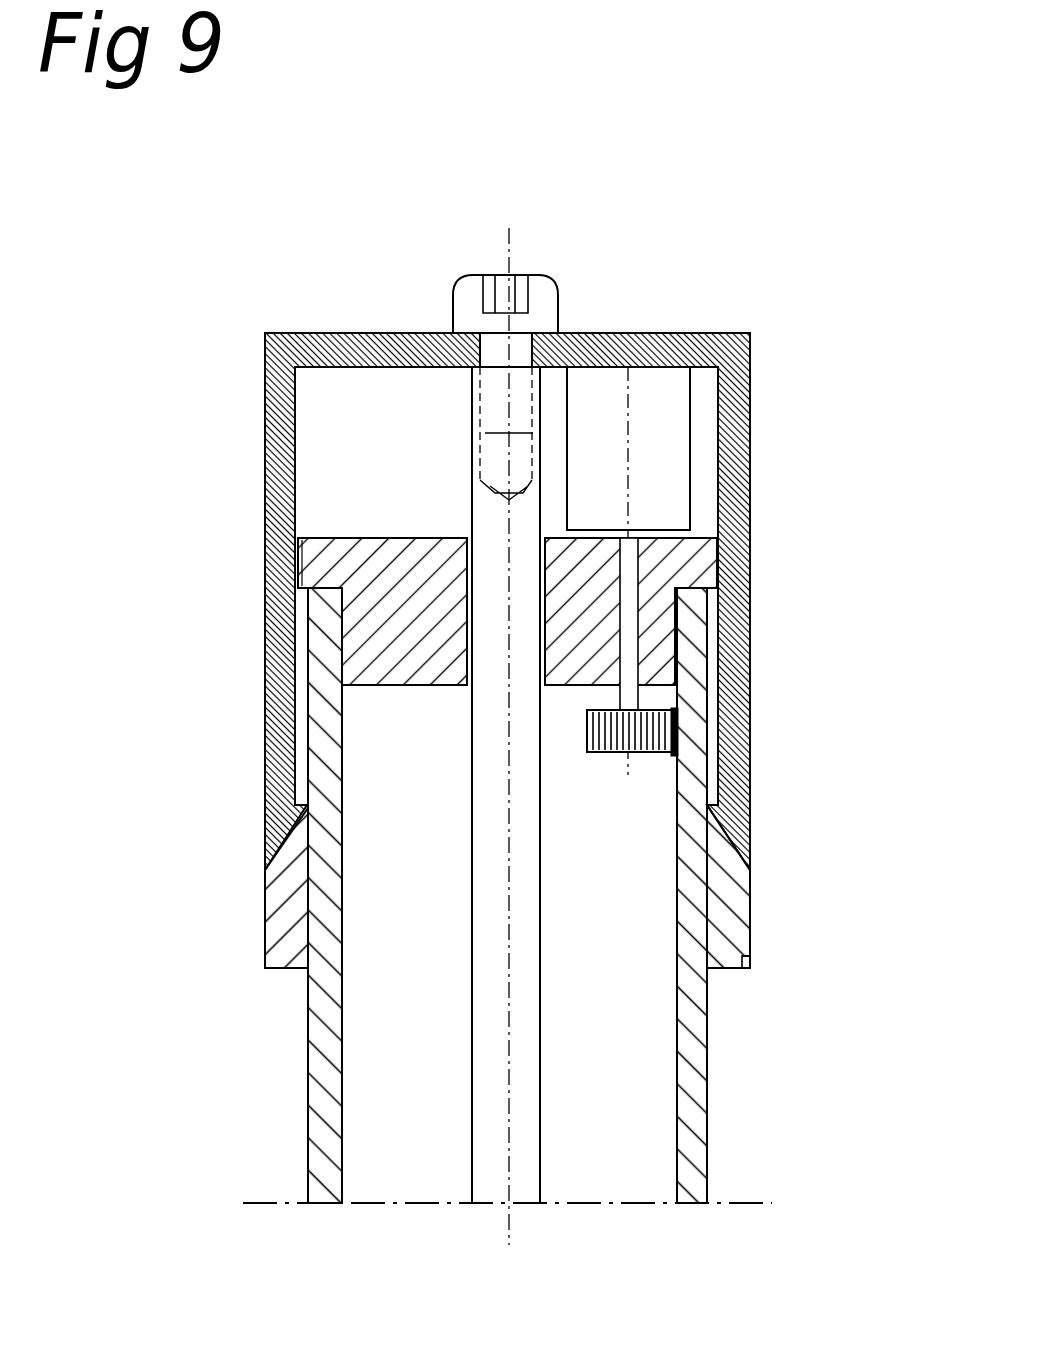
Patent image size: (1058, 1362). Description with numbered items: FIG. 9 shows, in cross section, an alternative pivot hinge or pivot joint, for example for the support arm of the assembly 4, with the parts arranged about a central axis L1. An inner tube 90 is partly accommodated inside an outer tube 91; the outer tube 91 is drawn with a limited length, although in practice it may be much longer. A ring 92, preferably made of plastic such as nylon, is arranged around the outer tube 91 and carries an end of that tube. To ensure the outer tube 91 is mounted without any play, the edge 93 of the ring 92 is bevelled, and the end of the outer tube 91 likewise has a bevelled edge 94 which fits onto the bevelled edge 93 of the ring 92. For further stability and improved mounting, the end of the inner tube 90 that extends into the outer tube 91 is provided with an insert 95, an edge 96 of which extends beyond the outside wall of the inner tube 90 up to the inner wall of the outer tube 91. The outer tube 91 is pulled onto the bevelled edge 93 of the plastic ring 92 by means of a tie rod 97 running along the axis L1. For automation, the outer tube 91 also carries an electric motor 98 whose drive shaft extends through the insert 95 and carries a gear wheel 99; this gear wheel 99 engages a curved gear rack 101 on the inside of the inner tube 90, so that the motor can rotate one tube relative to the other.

The cylinder assembly 4 is at (782, 838).
The inner tube 90 is at (700, 1120).
The outer tube 91 is at (750, 478).
The ring 92 is at (748, 969).
The bevelled edge of the ring 93 is at (752, 920).
The bevelled edge of the outer tube 94 is at (720, 795).
The insert 95 is at (357, 653).
The edge of the insert 96 is at (301, 555).
The tie rod 97 is at (482, 1113).
The electric motor 98 is at (648, 385).
The gear wheel 99 is at (605, 752).
The gear rack 101 is at (672, 757).
The central axis L1 is at (508, 245).